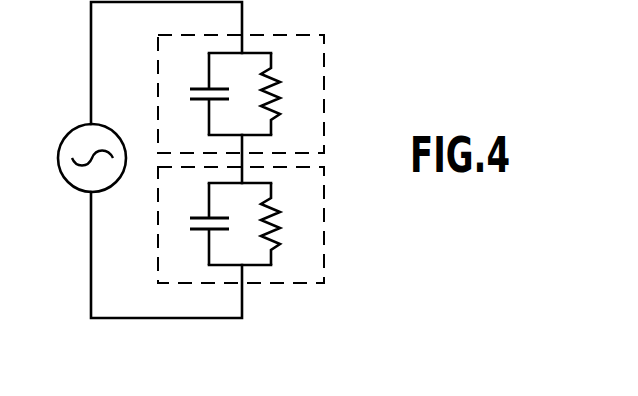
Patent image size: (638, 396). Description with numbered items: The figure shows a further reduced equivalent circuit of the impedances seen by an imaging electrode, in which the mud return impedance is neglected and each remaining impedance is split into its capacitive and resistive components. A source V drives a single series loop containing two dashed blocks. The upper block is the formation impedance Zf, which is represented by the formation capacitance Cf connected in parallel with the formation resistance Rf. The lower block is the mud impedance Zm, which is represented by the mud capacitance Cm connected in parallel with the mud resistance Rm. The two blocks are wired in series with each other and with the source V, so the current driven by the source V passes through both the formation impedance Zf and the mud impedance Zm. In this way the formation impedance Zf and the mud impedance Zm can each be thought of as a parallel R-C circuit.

The voltage source V is at (87, 156).
The formation capacitance Cf is at (205, 94).
The formation resistance Rf is at (287, 94).
The formation impedance Zf is at (255, 94).
The mud capacitance Cm is at (200, 224).
The mud resistance Rm is at (290, 224).
The mud impedance Zm is at (261, 225).